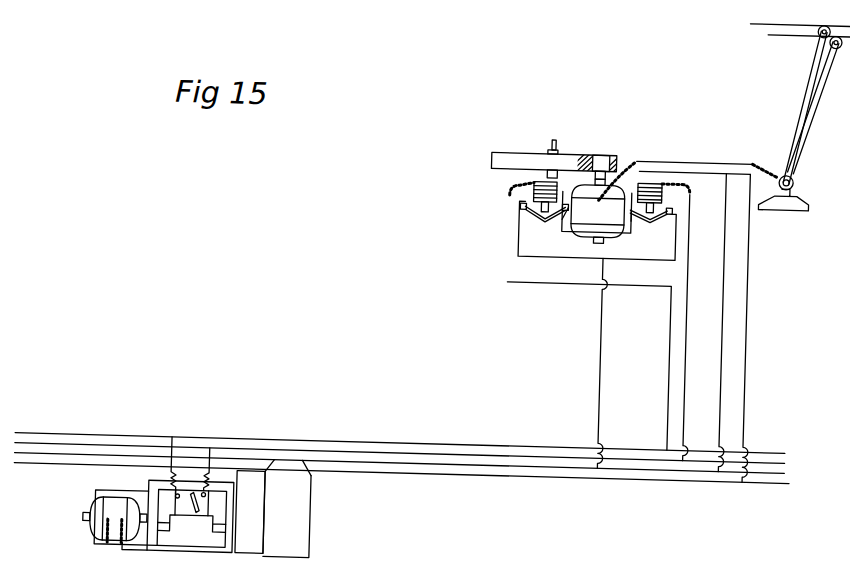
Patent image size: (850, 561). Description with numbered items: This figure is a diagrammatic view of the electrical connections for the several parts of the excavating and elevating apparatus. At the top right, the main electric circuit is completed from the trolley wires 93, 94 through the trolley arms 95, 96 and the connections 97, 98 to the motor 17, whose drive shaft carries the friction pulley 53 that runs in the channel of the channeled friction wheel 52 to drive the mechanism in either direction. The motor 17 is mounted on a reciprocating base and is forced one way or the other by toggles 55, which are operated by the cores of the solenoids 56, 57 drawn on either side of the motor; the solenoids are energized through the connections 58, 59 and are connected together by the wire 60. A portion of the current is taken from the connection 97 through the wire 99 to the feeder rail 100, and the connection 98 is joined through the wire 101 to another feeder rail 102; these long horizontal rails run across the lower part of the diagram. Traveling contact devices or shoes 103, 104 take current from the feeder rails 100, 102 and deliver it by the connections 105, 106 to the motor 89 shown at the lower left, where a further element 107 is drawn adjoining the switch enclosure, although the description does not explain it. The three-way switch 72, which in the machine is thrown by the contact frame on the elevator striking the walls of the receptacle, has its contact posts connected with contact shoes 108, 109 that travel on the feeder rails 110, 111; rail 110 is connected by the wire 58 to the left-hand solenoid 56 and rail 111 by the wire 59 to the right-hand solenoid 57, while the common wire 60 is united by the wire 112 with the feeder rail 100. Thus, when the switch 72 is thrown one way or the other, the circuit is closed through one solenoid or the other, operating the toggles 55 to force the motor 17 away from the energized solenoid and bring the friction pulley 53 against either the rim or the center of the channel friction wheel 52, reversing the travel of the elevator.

The motor 17 is at (596, 211).
The channeled friction wheel 52 is at (514, 150).
The friction pulley 53 is at (597, 153).
The toggles 55 is at (542, 219).
The solenoid 56 is at (526, 189).
The solenoid 57 is at (661, 188).
The wire 58 is at (667, 393).
The wire 59 is at (683, 337).
The wire 60 is at (607, 253).
The three-way switch 72 is at (190, 516).
The motor 89 is at (120, 519).
The trolley wire 93 is at (745, 15).
The trolley wire 94 is at (774, 27).
The trolley arm 95 is at (795, 89).
The trolley arm 96 is at (805, 96).
The connection 97 is at (708, 154).
The connection 98 is at (686, 166).
The wire 99 is at (711, 322).
The feeder rail 100 is at (505, 463).
The wire 101 is at (762, 328).
The feeder rail 102 is at (606, 473).
The contact shoe 103 is at (323, 472).
The contact shoe 104 is at (271, 475).
The connection 105 is at (280, 512).
The connection 106 is at (314, 526).
The conductor 107 is at (237, 479).
The contact shoe 108 is at (177, 435).
The contact shoe 109 is at (210, 453).
The feeder rail 110 is at (270, 443).
The feeder rail 111 is at (312, 453).
The wire 112 is at (612, 363).